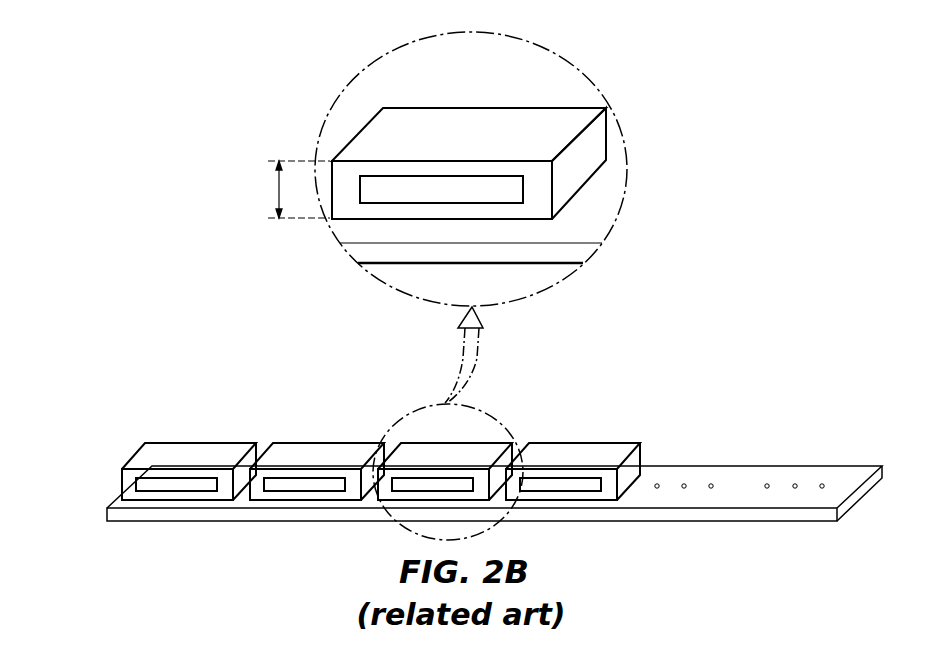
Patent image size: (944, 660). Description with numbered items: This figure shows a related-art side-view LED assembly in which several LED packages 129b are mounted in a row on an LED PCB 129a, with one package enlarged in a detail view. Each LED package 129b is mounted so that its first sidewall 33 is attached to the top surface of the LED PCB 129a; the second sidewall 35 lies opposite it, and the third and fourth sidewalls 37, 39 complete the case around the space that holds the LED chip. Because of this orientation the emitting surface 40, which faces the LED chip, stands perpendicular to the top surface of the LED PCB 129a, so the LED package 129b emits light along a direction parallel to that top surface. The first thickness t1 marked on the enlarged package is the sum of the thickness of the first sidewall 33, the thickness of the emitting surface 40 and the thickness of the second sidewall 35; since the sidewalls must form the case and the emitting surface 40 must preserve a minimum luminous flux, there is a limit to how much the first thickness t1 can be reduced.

The first sidewall 33 is at (490, 212).
The second sidewall 35 is at (483, 167).
The third sidewall 37 is at (537, 193).
The fourth sidewall 39 is at (350, 182).
The emitting surface 40 is at (413, 190).
The first thickness t1 is at (293, 189).
The LED PCB 129a is at (745, 478).
The LED package 129b is at (110, 445).